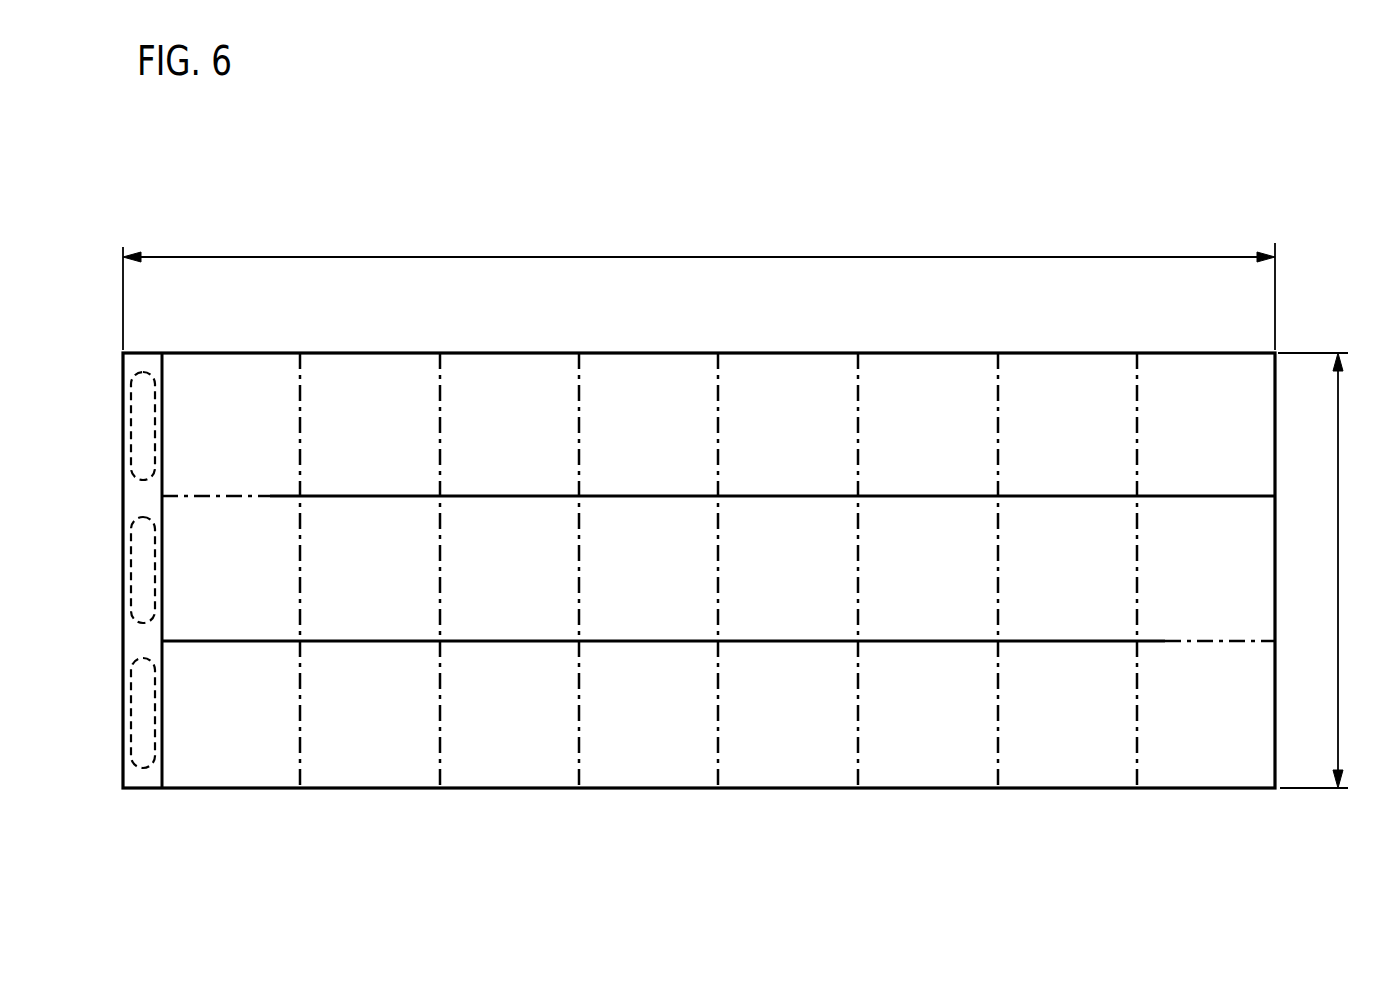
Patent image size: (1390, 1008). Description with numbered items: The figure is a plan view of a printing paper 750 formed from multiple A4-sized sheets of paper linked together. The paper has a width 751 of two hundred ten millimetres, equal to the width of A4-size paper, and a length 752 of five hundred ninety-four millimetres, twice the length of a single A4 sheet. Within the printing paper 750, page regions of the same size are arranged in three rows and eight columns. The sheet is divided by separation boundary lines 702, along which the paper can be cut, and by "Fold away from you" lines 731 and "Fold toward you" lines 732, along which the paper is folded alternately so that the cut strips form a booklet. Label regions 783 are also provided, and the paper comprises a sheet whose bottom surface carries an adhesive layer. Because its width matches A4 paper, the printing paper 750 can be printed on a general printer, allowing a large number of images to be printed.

The printing paper 750 is at (1050, 797).
The width 751 is at (1329, 570).
The length 752 is at (699, 287).
The separation boundary lines 702 is at (162, 378).
The "Fold away from you" lines 731 is at (300, 378).
The "Fold toward you" lines 732 is at (440, 378).
The label regions 783 is at (131, 386).